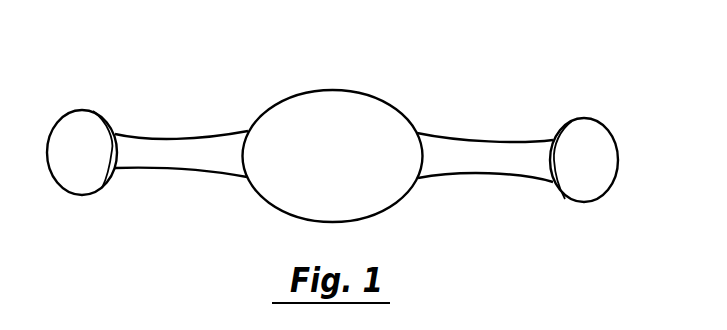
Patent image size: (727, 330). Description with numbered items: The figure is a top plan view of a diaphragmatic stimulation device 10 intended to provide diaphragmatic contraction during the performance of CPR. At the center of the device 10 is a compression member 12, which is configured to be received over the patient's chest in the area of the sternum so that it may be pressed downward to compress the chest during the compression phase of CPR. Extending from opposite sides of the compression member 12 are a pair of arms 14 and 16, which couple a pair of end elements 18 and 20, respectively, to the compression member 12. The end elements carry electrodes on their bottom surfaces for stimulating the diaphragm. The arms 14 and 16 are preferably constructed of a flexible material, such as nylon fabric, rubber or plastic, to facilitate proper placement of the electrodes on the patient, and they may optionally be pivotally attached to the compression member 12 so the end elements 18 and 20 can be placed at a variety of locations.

The device 10 is at (398, 90).
The compression member 12 is at (312, 102).
The arm 14 is at (480, 158).
The arm 16 is at (190, 153).
The end element 18 is at (595, 178).
The end element 20 is at (68, 170).